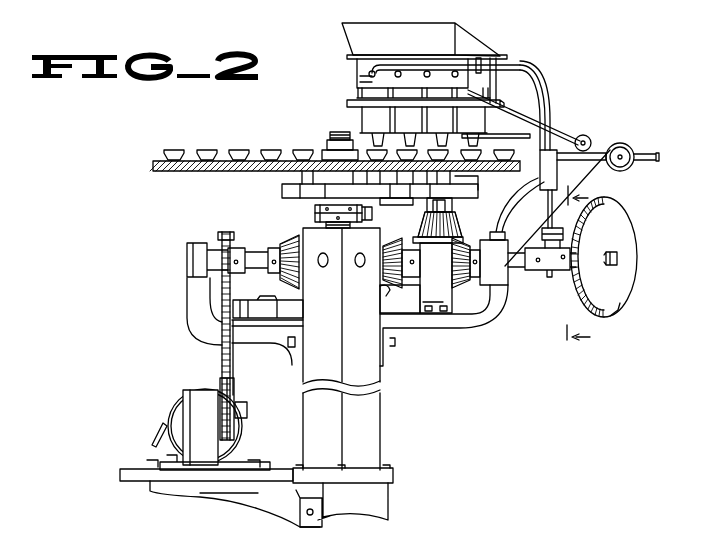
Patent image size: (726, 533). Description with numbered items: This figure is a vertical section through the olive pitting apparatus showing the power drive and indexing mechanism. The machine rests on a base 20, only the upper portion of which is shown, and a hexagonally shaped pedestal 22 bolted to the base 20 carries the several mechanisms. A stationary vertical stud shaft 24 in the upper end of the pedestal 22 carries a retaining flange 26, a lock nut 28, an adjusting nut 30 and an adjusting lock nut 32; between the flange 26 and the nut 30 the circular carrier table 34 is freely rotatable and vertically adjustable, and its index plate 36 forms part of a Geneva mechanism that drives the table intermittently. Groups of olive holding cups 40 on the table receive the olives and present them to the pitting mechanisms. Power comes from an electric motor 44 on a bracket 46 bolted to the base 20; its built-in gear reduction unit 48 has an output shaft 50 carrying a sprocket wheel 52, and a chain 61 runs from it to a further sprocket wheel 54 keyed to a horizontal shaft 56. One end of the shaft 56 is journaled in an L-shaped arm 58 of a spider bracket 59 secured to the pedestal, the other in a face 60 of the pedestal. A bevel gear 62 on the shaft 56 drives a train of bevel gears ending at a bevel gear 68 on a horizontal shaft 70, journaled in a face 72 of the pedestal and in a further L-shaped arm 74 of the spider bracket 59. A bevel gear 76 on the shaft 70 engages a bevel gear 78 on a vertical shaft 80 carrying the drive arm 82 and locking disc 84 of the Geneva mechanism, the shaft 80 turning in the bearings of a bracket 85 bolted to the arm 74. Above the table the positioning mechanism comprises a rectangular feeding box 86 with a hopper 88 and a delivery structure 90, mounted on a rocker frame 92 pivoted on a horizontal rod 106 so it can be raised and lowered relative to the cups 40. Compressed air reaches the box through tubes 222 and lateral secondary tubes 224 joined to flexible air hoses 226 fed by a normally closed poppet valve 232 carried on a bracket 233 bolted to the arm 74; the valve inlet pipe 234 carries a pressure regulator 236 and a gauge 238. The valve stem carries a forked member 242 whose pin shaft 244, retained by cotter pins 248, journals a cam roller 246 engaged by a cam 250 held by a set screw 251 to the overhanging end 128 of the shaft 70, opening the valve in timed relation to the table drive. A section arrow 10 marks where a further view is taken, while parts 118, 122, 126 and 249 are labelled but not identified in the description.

The section line 10 is at (557, 257).
The base 20 is at (390, 496).
The pedestal 22 is at (378, 422).
The stud shaft 24 is at (330, 140).
The retaining flange 26 is at (322, 155).
The lock nut 28 is at (330, 136).
The adjusting nut 30 is at (315, 208).
The adjusting lock nut 32 is at (315, 218).
The carrier table 34 is at (153, 165).
The index plate 36 is at (282, 191).
The olive holding cups 40 is at (240, 150).
The electric motor 44 is at (178, 410).
The bracket 46 is at (252, 498).
The gear reduction unit 48 is at (200, 427).
The output shaft 50 is at (247, 409).
The sprocket wheel 52 is at (235, 398).
The sprocket wheel 54 is at (236, 250).
The horizontal shaft 56 is at (258, 270).
The L-shaped arm 58 is at (188, 311).
The spider bracket 59 is at (296, 363).
The face 60 is at (300, 240).
The chain 61 is at (222, 356).
The bevel gear 62 is at (294, 280).
The bevel gear 68 is at (391, 288).
The horizontal shaft 70 is at (436, 278).
The face 72 is at (400, 300).
The L-shaped arm 74 is at (499, 313).
The bevel gear 76 is at (456, 240).
The bevel gear 78 is at (460, 229).
The vertical shaft 80 is at (447, 214).
The drive arm 82 is at (375, 216).
The locking disc 84 is at (475, 179).
The bracket 85 is at (435, 298).
The feeding box 86 is at (366, 70).
The hopper 88 is at (352, 40).
The delivery structure 90 is at (370, 120).
The rocker frame 92 is at (566, 124).
The horizontal rod 106 is at (527, 134).
The gear 118 is at (618, 258).
The link 122 is at (616, 315).
The link 126 is at (552, 329).
The overhanging end 128 is at (573, 295).
The tube 222 is at (360, 80).
The secondary tube 224 is at (388, 73).
The flexible air hose 226 is at (538, 114).
The poppet valve 232 is at (560, 168).
The bracket 233 is at (528, 188).
The pipe 234 is at (652, 154).
The pressure regulator 236 is at (621, 143).
The gauge 238 is at (590, 137).
The forked-shaped member 242 is at (585, 217).
The pin shaft 244 is at (582, 239).
The cam roller 246 is at (548, 270).
The cotter pins 248 is at (494, 262).
The tube 249 is at (512, 228).
The cam 250 is at (542, 275).
The set screw 251 is at (535, 262).